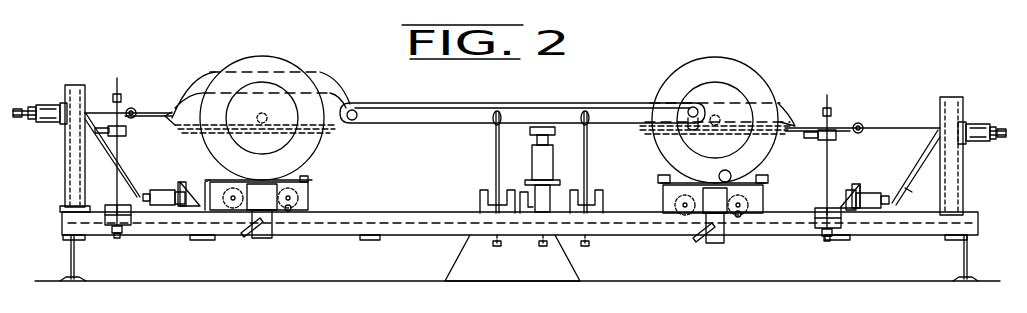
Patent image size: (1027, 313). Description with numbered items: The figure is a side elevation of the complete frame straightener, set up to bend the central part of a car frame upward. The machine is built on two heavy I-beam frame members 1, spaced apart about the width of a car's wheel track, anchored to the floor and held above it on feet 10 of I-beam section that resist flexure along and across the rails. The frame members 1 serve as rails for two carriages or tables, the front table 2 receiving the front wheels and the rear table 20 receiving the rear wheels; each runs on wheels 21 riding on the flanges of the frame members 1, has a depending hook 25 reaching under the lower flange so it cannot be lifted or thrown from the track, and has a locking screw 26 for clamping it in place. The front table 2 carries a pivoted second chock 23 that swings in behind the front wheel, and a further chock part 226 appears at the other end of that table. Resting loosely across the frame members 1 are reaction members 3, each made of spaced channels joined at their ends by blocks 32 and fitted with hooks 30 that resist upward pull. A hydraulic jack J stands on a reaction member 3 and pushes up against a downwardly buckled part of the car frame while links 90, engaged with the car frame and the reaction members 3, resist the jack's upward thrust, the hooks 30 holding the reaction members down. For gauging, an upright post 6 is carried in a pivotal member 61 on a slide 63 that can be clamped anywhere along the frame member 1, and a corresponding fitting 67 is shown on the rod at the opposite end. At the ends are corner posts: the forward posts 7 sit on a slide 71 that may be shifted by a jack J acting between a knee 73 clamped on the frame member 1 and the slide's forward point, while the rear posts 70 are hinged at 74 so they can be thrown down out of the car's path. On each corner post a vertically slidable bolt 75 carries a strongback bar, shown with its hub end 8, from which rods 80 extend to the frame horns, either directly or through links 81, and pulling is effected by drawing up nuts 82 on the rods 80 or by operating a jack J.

The frame member 1 is at (390, 214).
The front table 2 is at (762, 196).
The reaction member 3 is at (527, 200).
The upright post 6 is at (120, 140).
The forward corner post 7 is at (964, 187).
The hub 8 is at (52, 104).
The foot 10 is at (75, 258).
The rear table 20 is at (312, 196).
The wheel 21 is at (290, 214).
The second chock 23 is at (662, 184).
The depending hook 25 is at (260, 239).
The locking screw 26 is at (245, 239).
The hook 30 is at (543, 246).
The block 32 is at (486, 193).
The post mounting member 61 is at (112, 216).
The slide 63 is at (118, 236).
The rod clamp 67 is at (836, 141).
The rear corner post 70 is at (66, 160).
The slide 71 is at (895, 202).
The knee 73 is at (190, 196).
The hinge 74 is at (62, 208).
The bolt 75 is at (36, 113).
The rod 80 is at (104, 112).
The link 81 is at (136, 111).
The nut 82 is at (40, 121).
The link 90 is at (495, 168).
The cradle end bracket 226 is at (764, 185).
The hydraulic jack J is at (166, 194).